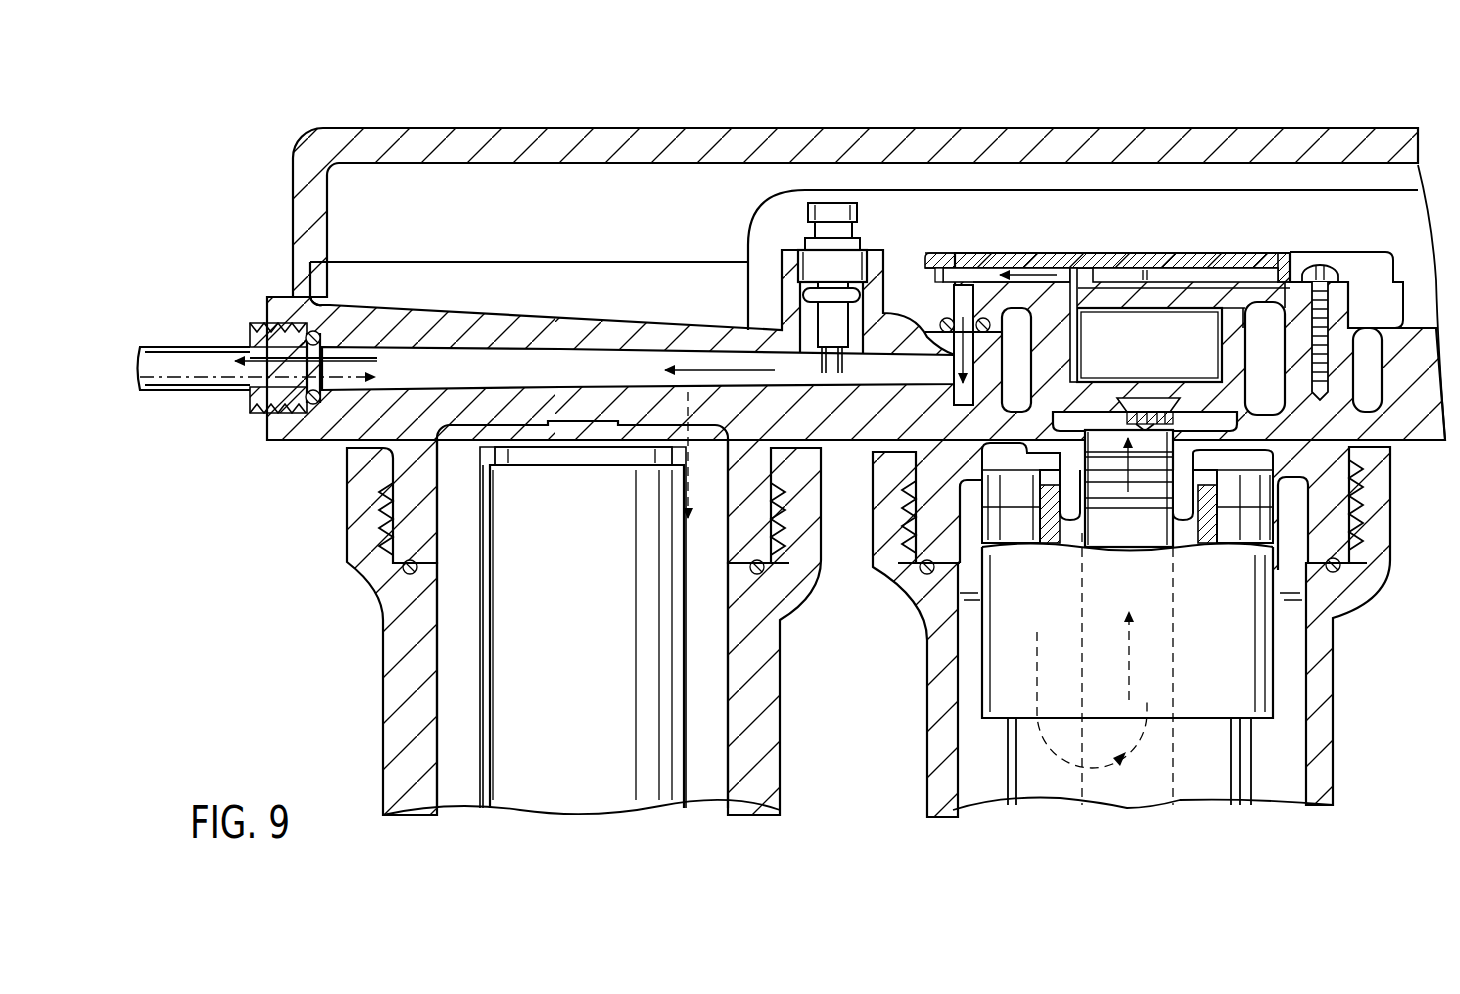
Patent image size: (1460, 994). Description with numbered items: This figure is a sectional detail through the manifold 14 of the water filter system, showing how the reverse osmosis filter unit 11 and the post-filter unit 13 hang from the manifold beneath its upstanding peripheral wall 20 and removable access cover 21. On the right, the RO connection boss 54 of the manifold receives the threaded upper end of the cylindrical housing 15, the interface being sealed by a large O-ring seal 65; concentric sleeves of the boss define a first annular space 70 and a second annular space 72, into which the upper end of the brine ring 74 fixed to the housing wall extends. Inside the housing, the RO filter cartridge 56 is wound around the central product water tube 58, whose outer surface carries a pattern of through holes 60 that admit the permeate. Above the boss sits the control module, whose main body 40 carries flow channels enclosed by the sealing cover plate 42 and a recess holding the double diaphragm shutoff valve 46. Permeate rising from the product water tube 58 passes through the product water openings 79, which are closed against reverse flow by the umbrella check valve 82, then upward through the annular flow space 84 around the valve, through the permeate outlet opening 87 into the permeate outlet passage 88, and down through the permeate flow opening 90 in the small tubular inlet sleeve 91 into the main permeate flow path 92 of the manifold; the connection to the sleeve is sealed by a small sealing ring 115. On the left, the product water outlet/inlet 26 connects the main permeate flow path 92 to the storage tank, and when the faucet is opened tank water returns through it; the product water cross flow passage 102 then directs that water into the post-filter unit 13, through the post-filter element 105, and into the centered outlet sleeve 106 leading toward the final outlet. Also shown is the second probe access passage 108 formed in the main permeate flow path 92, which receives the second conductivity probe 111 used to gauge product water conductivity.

The reverse osmosis membrane filter unit 11 is at (1330, 742).
The post-filter unit 13 is at (375, 718).
The manifold 14 is at (663, 318).
The cylindrical housing 15 is at (1323, 690).
The peripheral wall 20 is at (377, 262).
The access cover 21 is at (597, 142).
The product water outlet/inlet 26 is at (218, 367).
The main body 40 is at (1230, 300).
The sealing cover plate 42 is at (1262, 254).
The double diaphragm shutoff valve 46 is at (1085, 338).
The RO connection boss 54 is at (910, 495).
The RO filter cartridge 56 is at (1205, 780).
The product water tube 58 is at (1128, 517).
The through holes 60 is at (1135, 733).
The O-ring seal 65 is at (922, 562).
The first annular space 70 is at (1300, 512).
The second annular space 72 is at (1273, 442).
The brine ring 74 is at (1010, 648).
The product water openings 79 is at (1180, 413).
The umbrella check valve 82 is at (1147, 400).
The annular flow space 84 is at (1070, 397).
The permeate outlet opening 87 is at (1073, 270).
The permeate outlet passage 88 is at (1000, 272).
The permeate flow opening 90 is at (948, 359).
The tubular inlet sleeve 91 is at (984, 345).
The main permeate flow path 92 is at (563, 363).
The product water cross flow passage 102 is at (678, 397).
The post-filter element 105 is at (585, 778).
The outlet sleeve 106 is at (578, 432).
The second probe access passage 108 is at (817, 322).
The second conductivity probe 111 is at (833, 240).
The sealing ring 115 is at (953, 318).